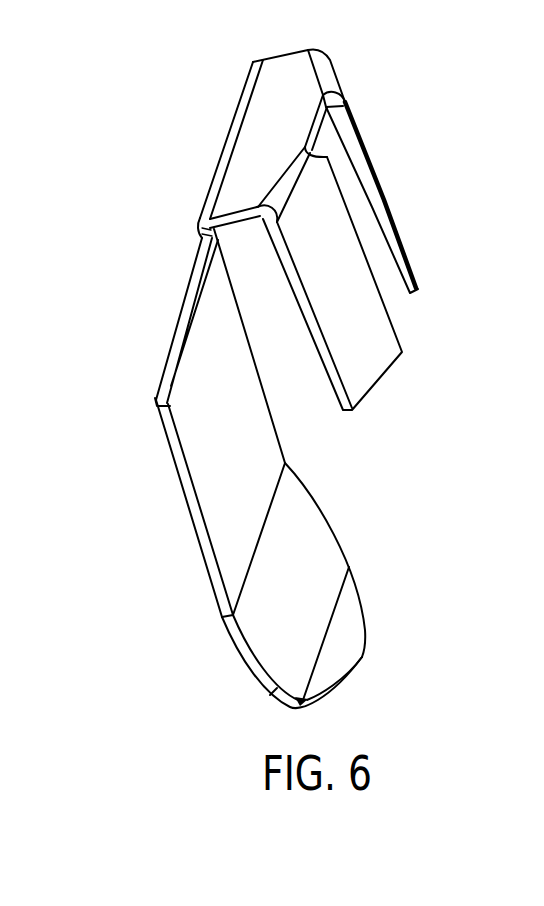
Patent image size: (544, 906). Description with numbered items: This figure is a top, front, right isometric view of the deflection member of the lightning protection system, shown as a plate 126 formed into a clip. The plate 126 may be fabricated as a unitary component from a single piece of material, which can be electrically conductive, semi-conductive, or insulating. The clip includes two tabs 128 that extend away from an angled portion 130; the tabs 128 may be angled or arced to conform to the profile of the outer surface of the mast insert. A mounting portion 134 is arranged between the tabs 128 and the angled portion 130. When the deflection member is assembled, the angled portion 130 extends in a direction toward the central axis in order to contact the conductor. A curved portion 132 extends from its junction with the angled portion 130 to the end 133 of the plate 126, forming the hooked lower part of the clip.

The plate 126 is at (384, 60).
The tabs 128 is at (385, 196).
The angled portion 130 is at (178, 322).
The curved portion 132 is at (247, 672).
The end 133 is at (362, 657).
The mounting portion 134 is at (279, 136).